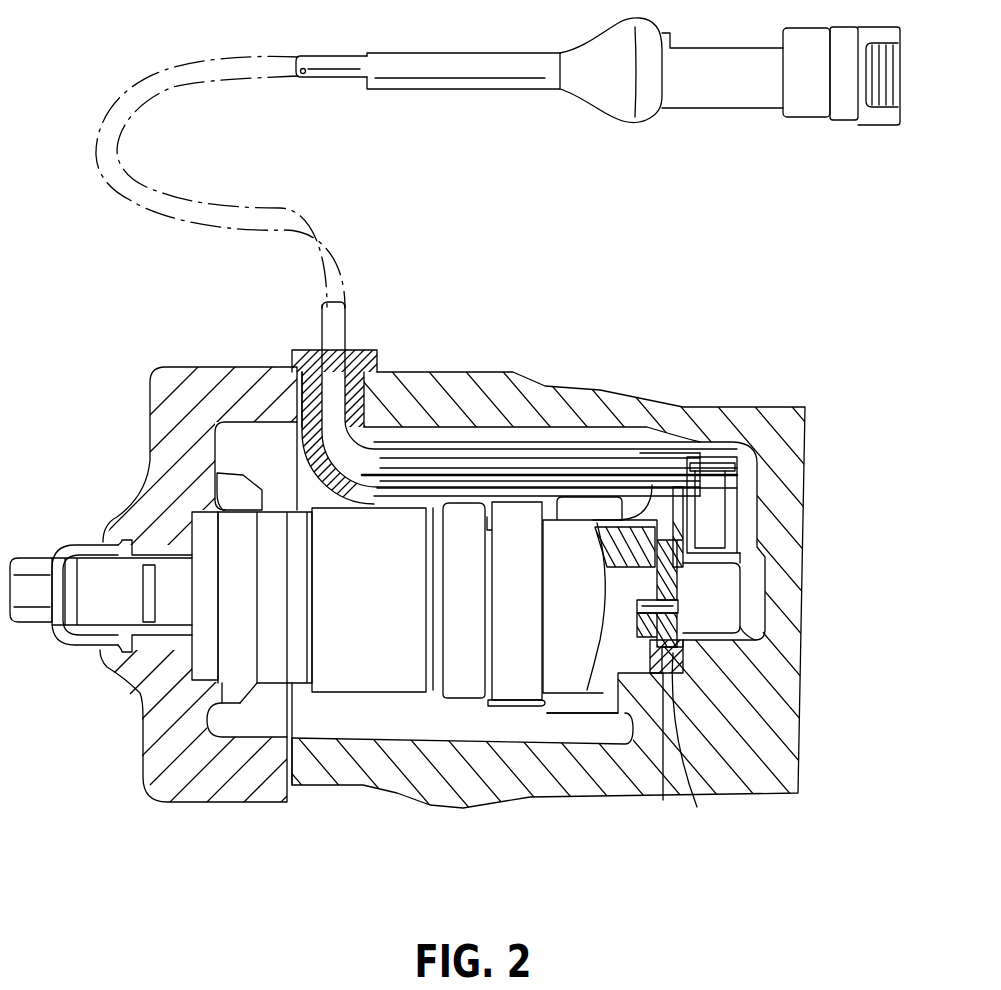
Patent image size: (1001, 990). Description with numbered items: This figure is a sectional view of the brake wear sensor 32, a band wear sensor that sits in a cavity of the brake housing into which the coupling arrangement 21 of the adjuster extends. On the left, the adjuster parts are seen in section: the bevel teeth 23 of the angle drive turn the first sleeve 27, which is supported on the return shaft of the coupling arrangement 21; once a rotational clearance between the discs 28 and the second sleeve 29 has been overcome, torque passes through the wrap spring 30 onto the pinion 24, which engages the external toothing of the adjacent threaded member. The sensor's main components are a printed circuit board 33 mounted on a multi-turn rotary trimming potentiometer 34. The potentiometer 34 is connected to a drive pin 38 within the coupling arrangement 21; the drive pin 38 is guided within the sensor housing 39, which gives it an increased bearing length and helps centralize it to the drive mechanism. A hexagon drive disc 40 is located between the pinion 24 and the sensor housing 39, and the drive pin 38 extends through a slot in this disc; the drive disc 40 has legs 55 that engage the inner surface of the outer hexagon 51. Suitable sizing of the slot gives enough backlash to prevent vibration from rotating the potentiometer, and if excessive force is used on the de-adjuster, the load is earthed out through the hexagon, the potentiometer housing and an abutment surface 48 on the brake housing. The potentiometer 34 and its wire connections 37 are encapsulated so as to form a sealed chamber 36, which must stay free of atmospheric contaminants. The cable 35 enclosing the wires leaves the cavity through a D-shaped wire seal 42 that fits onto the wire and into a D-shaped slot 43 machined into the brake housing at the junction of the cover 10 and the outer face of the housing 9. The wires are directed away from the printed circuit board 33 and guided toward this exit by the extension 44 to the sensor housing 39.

The housing 9 is at (758, 767).
The cover 10 is at (207, 382).
The coupling arrangement 21 is at (183, 663).
The bevel teeth 23 is at (240, 707).
The pinion 24 is at (603, 683).
The first sleeve 27 is at (263, 649).
The discs 28 is at (353, 650).
The second sleeve 29 is at (452, 650).
The wrap spring 30 is at (510, 706).
The sensor 32 is at (745, 634).
The printed circuit board 33 is at (707, 538).
The multi-turn rotary trimming potentiometer 34 is at (720, 588).
The cable 35 is at (223, 207).
The sealed chamber 36 is at (757, 560).
The wire connections 37 is at (700, 470).
The drive pin 38 is at (670, 608).
The sensor housing 39 is at (657, 652).
The hexagon drive disc 40 is at (663, 673).
The D-shaped wire seal 42 is at (357, 347).
The D-shaped slot 43 is at (365, 397).
The extension 44 is at (740, 500).
The abutment surface 48 is at (699, 751).
The outer hexagon 51 is at (620, 622).
The legs 55 is at (630, 573).